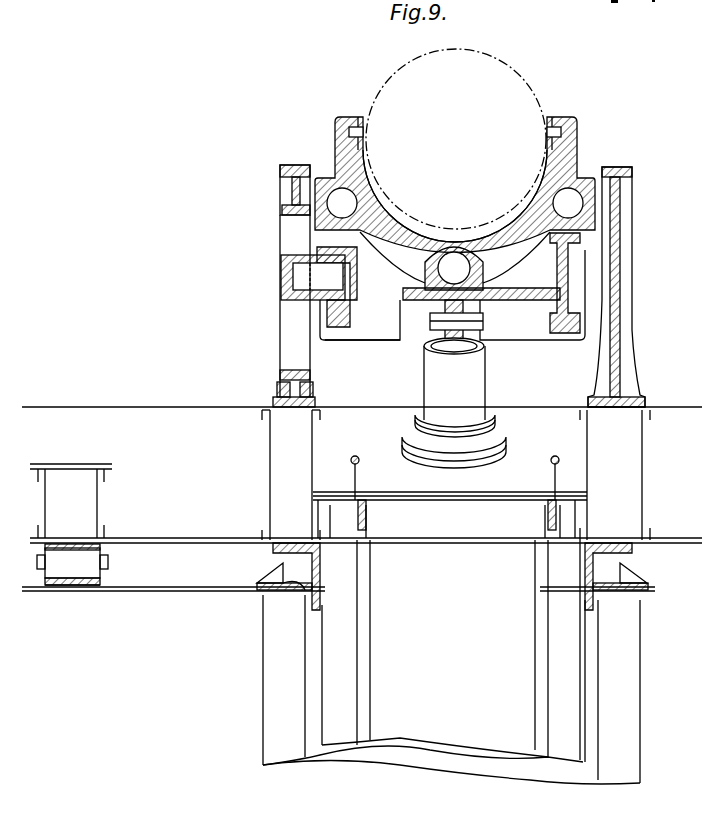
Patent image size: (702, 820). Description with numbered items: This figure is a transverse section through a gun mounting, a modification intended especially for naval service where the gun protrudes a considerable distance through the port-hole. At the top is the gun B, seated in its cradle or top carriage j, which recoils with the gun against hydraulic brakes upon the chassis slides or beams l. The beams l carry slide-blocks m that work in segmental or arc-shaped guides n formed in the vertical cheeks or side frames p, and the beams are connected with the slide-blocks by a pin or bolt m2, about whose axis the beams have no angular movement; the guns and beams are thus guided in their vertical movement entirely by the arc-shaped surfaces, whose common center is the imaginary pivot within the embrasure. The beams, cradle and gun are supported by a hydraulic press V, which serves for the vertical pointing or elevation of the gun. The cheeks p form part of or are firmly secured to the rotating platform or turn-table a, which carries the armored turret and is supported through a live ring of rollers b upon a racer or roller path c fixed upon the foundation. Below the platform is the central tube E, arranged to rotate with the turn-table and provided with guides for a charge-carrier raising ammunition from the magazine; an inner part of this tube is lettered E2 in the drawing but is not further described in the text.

The gun B is at (456, 139).
The cradle or top carriage j is at (338, 155).
The chassis slides or beams l is at (558, 262).
The cheeks or side frames p is at (289, 166).
The slide-block m is at (298, 267).
The pin or bolt m2 is at (318, 276).
The segmental guides n is at (291, 377).
The hydraulic press V is at (444, 384).
The rotating platform or turn-table a is at (362, 500).
The live ring of rollers b is at (72, 564).
The racer or roller path c is at (88, 590).
The central tube E is at (452, 620).
The inner casing wall E2 is at (452, 645).